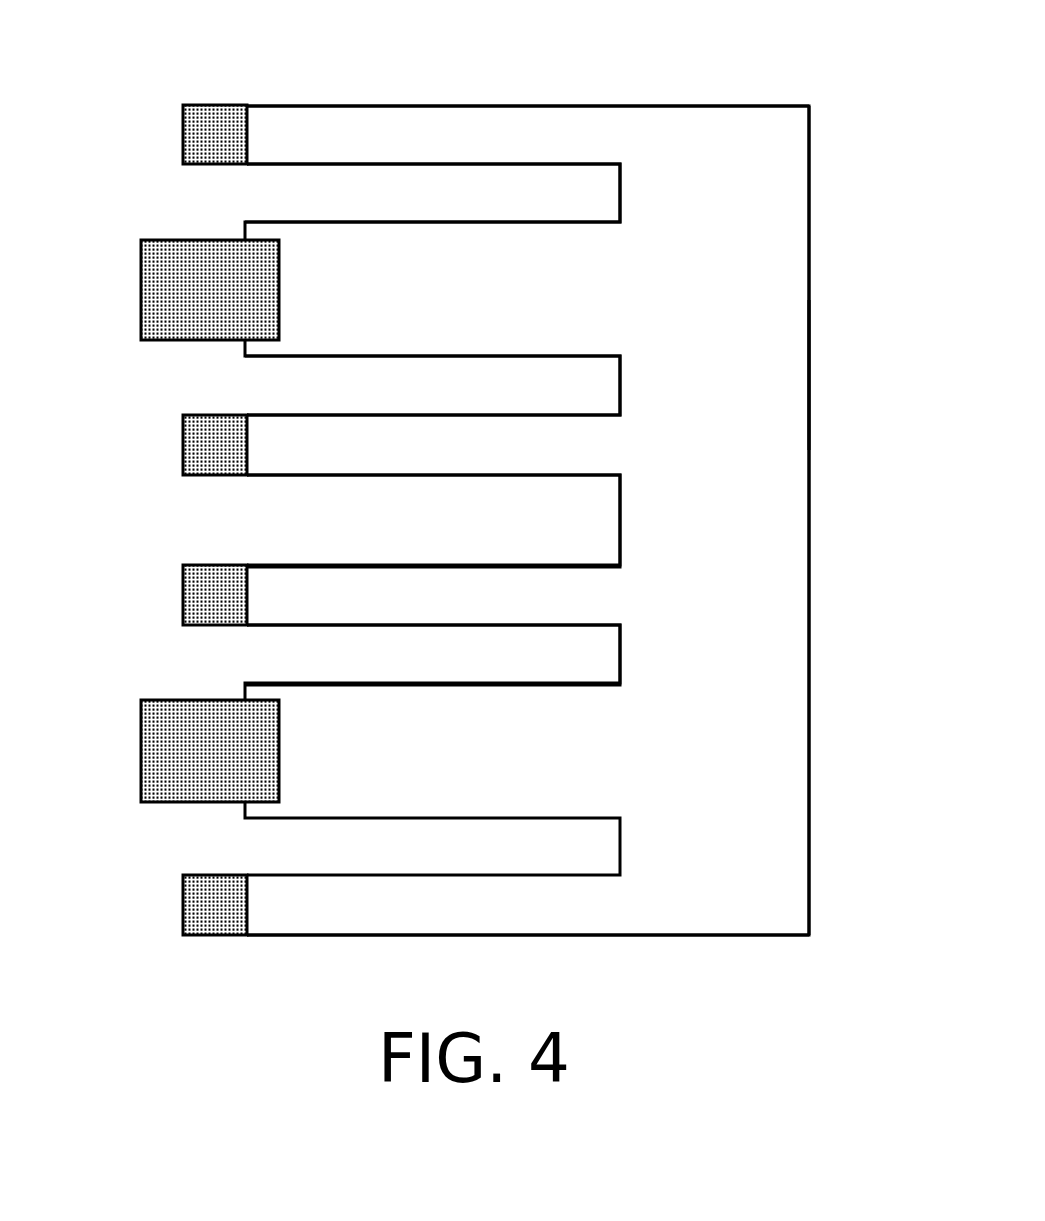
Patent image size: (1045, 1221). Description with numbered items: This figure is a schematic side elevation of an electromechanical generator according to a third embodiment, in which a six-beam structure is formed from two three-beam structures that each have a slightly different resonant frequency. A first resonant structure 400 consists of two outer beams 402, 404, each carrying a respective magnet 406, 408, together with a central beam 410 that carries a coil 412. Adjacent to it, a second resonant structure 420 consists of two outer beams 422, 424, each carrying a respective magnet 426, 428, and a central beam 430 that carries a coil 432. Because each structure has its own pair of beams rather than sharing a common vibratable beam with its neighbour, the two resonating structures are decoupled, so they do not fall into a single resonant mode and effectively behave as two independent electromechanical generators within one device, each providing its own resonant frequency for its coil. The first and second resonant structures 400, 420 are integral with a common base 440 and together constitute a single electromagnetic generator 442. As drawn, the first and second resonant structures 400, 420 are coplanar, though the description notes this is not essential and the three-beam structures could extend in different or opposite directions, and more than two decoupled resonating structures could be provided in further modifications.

The first resonant structure 400 is at (765, 126).
The outer beam 402 is at (430, 126).
The outer beam 404 is at (430, 436).
The magnet 406 is at (183, 138).
The magnet 408 is at (183, 448).
The central beam 410 is at (430, 241).
The coil 412 is at (141, 293).
The second resonant structure 420 is at (767, 915).
The outer beam 422 is at (430, 586).
The outer beam 424 is at (432, 915).
The magnet 426 is at (183, 598).
The magnet 428 is at (183, 908).
The central beam 430 is at (430, 701).
The coil 432 is at (141, 754).
The common base 440 is at (790, 575).
The electromagnetic generator 442 is at (834, 366).